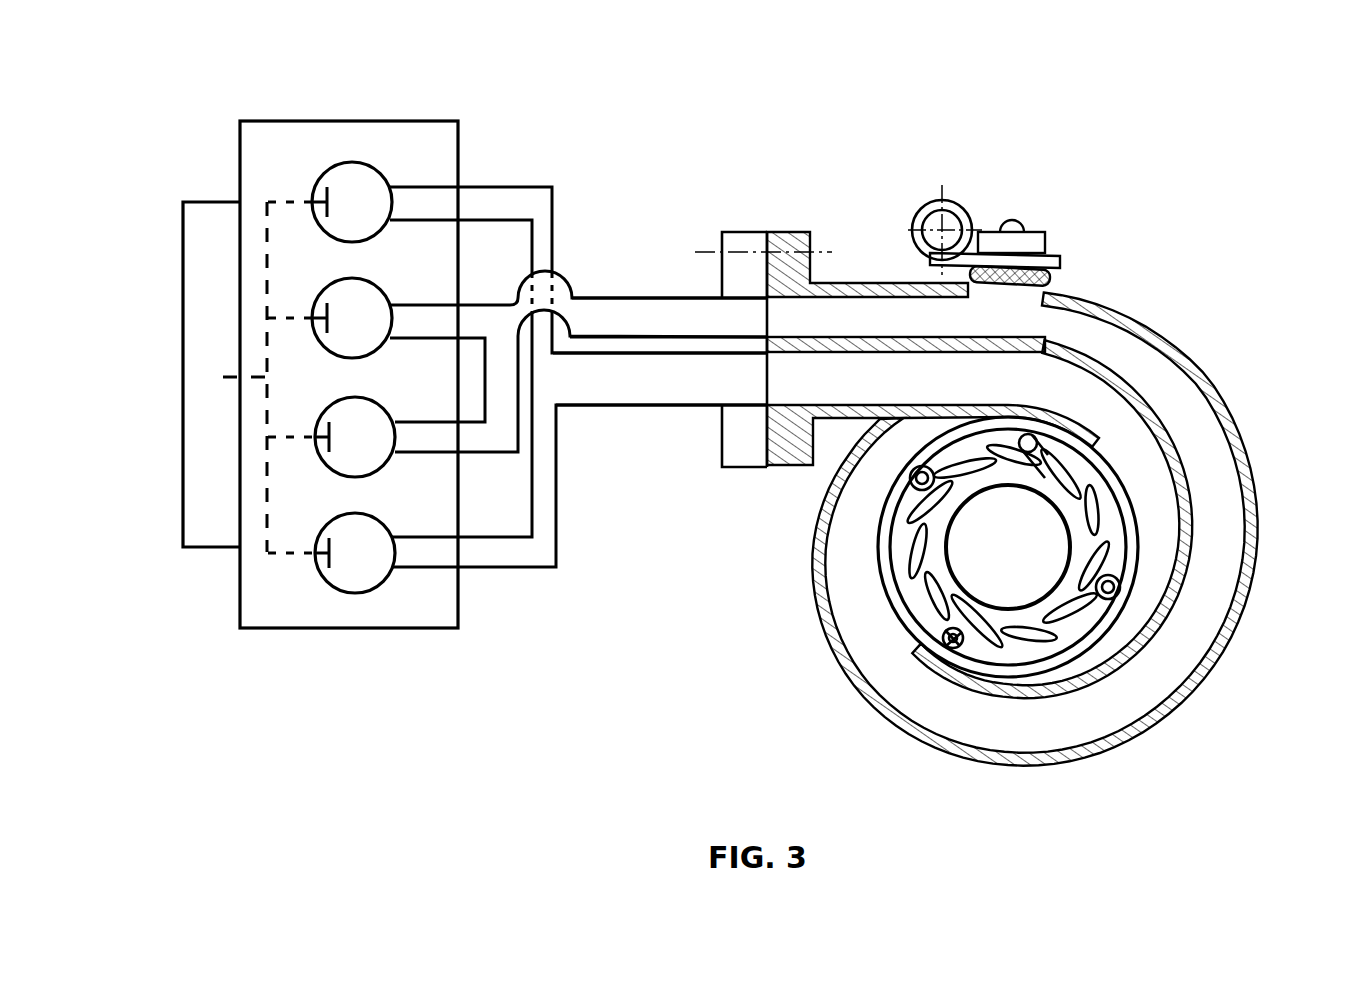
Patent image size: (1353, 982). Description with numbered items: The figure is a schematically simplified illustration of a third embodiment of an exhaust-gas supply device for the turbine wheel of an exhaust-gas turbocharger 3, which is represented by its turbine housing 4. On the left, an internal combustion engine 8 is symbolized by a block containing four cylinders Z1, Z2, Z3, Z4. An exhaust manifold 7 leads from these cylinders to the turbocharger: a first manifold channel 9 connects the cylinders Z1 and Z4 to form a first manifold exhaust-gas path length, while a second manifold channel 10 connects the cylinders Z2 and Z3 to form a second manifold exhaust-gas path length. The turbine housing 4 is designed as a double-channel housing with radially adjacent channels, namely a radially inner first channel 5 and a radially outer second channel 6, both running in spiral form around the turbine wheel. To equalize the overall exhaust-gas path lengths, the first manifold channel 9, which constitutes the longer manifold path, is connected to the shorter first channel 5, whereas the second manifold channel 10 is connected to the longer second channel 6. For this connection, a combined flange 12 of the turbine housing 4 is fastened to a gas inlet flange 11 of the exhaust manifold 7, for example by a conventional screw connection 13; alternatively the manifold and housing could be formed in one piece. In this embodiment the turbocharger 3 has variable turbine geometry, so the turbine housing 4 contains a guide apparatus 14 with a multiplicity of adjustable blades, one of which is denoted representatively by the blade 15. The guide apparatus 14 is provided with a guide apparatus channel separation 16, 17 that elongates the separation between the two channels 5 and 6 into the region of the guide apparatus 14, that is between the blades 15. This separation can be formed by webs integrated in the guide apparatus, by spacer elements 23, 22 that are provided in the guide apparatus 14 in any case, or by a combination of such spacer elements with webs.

The exhaust-gas turbocharger 3 is at (1068, 264).
The turbine housing 4 is at (1123, 294).
The first channel 5 is at (1150, 472).
The second channel 6 is at (1170, 387).
The exhaust manifold 7 is at (535, 168).
The internal combustion engine 8 is at (375, 138).
The first manifold channel 9 is at (620, 397).
The second manifold channel 10 is at (608, 307).
The gas inlet flange 11 is at (717, 240).
The combined flange 12 is at (795, 232).
The screw connection 13 is at (820, 255).
The guide apparatus 14 is at (910, 602).
The adjustable blade 15 is at (1080, 613).
The guide apparatus channel separation 16 is at (1030, 468).
The guide apparatus channel separation 17 is at (953, 613).
The spacer element 22 is at (947, 630).
The spacer element 23 is at (1037, 437).
The cylinder Z1 is at (363, 578).
The cylinder Z2 is at (343, 462).
The cylinder Z3 is at (335, 297).
The cylinder Z4 is at (333, 181).